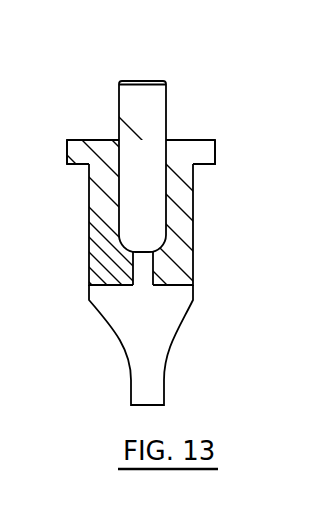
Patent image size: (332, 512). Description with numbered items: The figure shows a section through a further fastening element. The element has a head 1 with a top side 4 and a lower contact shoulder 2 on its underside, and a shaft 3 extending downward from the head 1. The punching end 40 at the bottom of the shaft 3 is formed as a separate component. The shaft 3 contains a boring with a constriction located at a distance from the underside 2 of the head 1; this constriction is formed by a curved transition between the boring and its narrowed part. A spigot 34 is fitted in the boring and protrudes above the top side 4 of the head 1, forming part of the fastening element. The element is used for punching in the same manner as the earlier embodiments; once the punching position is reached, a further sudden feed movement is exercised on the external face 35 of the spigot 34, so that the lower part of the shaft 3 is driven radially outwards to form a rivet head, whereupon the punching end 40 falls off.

The head 1 is at (208, 155).
The lower contact shoulder 2 is at (68, 165).
The shaft 3 is at (184, 222).
The top side 4 is at (204, 140).
The spigot 34 is at (152, 110).
The external face 35 is at (143, 81).
The punching end 40 is at (187, 348).